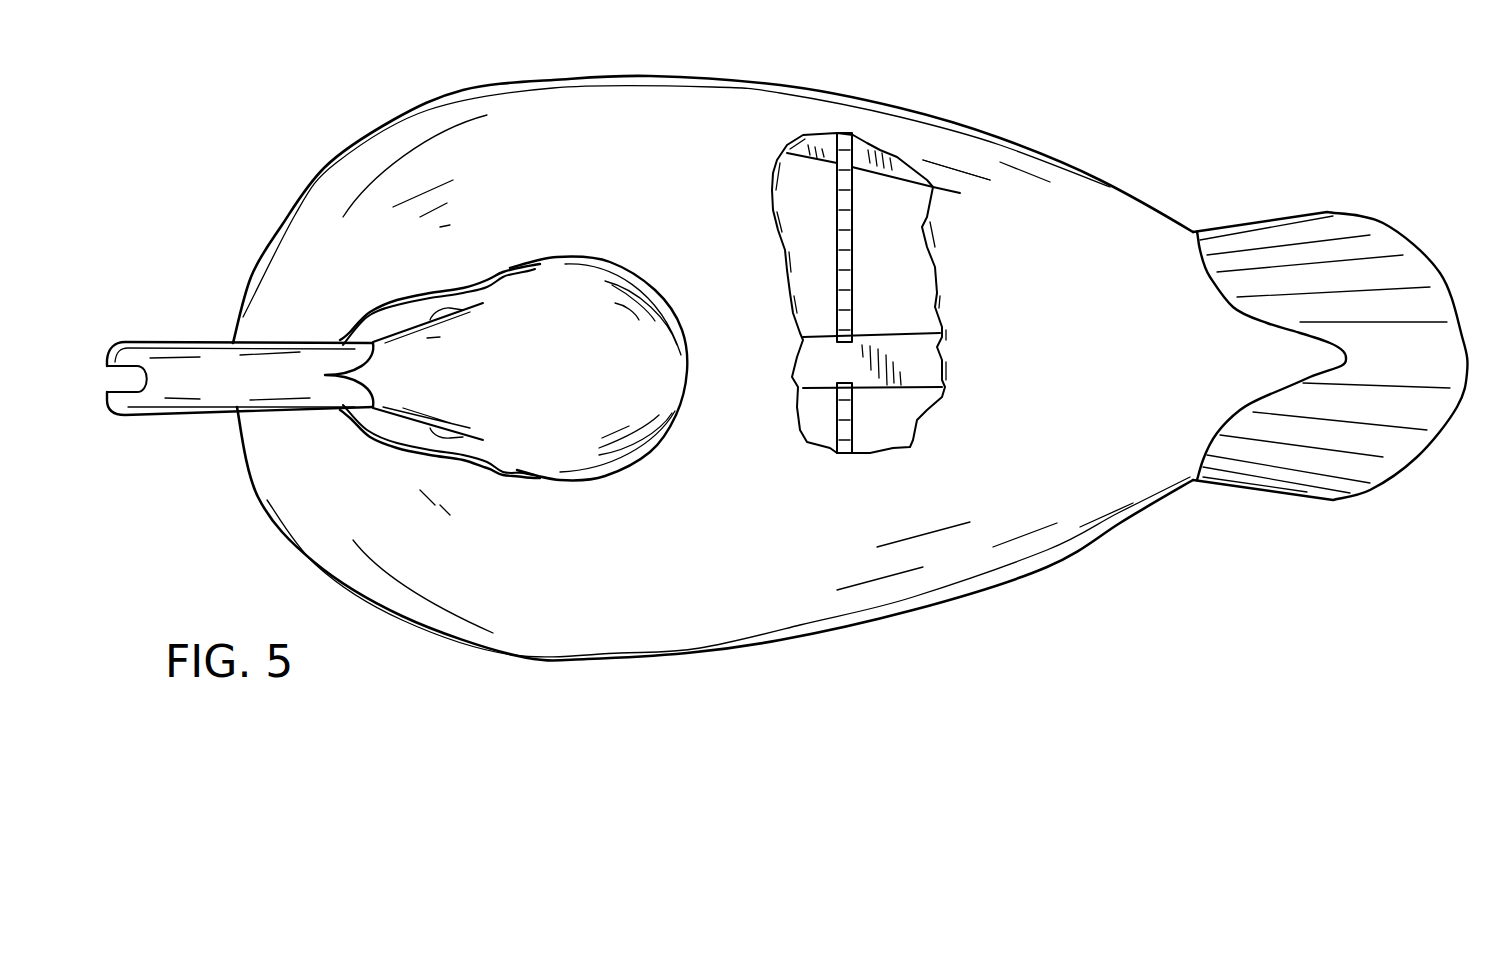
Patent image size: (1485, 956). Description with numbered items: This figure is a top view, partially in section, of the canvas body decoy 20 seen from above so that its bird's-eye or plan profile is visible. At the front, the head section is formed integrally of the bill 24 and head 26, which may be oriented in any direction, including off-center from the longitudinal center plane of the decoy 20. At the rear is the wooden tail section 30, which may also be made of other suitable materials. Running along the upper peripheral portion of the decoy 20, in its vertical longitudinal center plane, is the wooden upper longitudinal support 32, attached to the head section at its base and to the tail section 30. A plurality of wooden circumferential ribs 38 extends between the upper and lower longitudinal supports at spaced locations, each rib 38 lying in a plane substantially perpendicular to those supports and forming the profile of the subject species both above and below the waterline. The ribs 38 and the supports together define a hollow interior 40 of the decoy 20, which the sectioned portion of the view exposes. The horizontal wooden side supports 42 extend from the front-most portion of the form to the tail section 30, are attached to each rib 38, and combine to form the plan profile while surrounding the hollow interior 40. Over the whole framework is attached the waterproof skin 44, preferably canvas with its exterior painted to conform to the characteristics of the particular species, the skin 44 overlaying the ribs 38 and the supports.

The canvas body decoy 20 is at (1072, 133).
The bill 24 is at (207, 362).
The head 26 is at (577, 378).
The tail section 30 is at (1345, 223).
The upper longitudinal support 32 is at (902, 373).
The circumferential ribs 38 is at (843, 153).
The hollow interior 40 is at (885, 288).
The side supports 42 is at (900, 167).
The waterproof skin 44 is at (1075, 353).